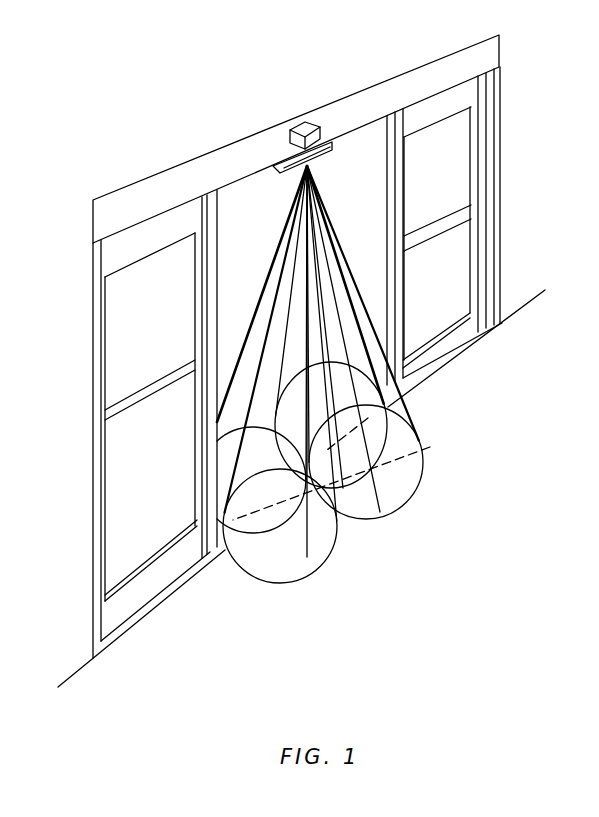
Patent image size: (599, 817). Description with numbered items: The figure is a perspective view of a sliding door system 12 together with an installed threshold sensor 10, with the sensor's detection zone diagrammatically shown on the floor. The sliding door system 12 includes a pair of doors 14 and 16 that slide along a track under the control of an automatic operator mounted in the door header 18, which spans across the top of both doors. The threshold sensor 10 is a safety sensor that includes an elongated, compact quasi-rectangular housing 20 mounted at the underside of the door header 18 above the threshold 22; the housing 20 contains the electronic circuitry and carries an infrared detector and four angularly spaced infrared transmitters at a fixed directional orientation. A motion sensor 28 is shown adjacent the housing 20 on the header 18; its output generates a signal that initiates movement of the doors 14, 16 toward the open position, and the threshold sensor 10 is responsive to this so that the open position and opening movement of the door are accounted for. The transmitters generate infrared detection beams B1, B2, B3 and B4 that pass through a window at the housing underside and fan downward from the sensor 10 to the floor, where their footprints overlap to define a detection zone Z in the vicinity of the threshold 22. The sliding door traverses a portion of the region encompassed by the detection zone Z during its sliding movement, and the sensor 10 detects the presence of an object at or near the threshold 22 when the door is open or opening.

The threshold sensor 10 is at (305, 120).
The sliding door system 12 is at (301, 346).
The door 14 is at (453, 348).
The door 16 is at (168, 572).
The door header 18 is at (227, 165).
The housing 20 is at (332, 140).
The threshold 22 is at (412, 441).
The motion sensor 28 is at (305, 121).
The infrared detection beam B1 is at (313, 543).
The infrared detection beam B2 is at (400, 403).
The infrared detection beam B3 is at (323, 222).
The infrared detection beam B4 is at (276, 248).
The detection zone Z is at (356, 376).